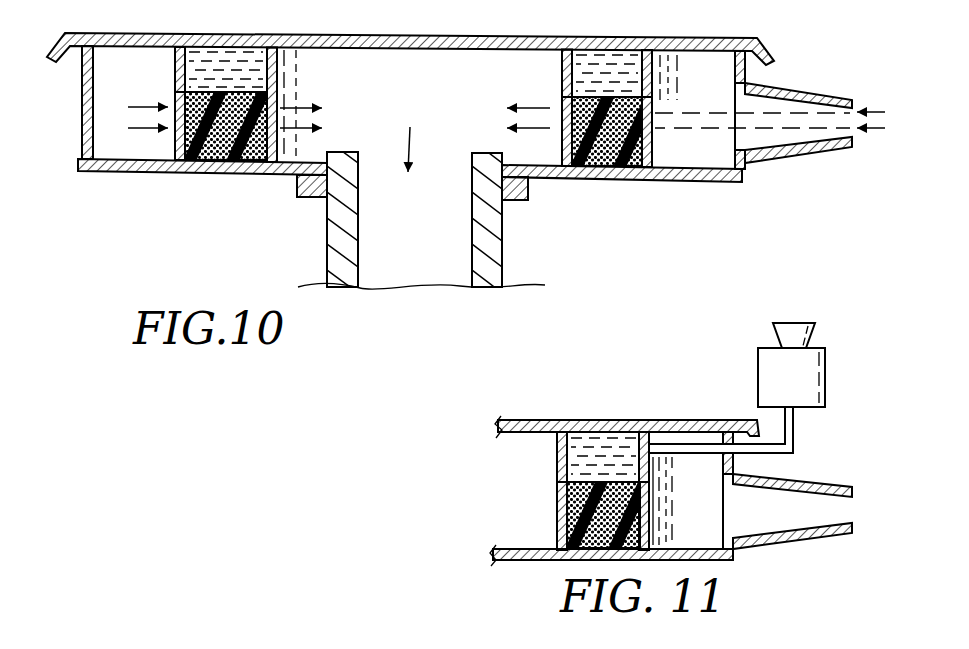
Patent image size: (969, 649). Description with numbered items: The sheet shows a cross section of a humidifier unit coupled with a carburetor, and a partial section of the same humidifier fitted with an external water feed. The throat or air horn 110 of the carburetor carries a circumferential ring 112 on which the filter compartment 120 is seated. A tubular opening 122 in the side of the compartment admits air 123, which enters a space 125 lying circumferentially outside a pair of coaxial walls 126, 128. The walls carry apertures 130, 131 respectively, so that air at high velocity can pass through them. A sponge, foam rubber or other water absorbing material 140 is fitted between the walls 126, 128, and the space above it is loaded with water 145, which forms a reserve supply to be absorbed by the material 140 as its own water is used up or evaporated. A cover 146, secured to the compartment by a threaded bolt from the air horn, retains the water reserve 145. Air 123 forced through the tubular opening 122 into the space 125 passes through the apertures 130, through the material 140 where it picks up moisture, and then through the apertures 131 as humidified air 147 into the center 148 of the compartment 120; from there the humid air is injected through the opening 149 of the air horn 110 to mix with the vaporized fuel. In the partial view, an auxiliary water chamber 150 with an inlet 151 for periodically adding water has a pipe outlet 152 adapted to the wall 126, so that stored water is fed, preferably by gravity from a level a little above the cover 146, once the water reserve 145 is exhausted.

In FIG. 10, the air horn 110 is at (503, 232).
In FIG. 10, the circumferential ring 112 is at (301, 196).
In FIG. 10, the filter compartment 120 is at (656, 182).
In FIG. 11, the filter compartment 120 is at (510, 562).
In FIG. 10, the tubular opening 122 is at (766, 160).
In FIG. 11, the tubular opening 122 is at (768, 548).
In FIG. 10, the air 123 is at (129, 128).
In FIG. 10, the space 125 is at (150, 157).
In FIG. 11, the space 125 is at (717, 532).
In FIG. 10, the wall 126 is at (175, 60).
In FIG. 11, the wall 126 is at (660, 470).
In FIG. 10, the wall 128 is at (562, 62).
In FIG. 11, the wall 128 is at (557, 450).
In FIG. 10, the apertures 130 is at (175, 104).
In FIG. 11, the apertures 130 is at (649, 494).
In FIG. 10, the apertures 131 is at (278, 105).
In FIG. 11, the apertures 131 is at (567, 497).
In FIG. 10, the water absorbing material 140 is at (212, 152).
In FIG. 11, the water absorbing material 140 is at (567, 527).
In FIG. 10, the water 145 is at (214, 63).
In FIG. 11, the water 145 is at (607, 443).
In FIG. 10, the cover 146 is at (391, 35).
In FIG. 11, the cover 146 is at (554, 420).
In FIG. 10, the filtered air flow 147 is at (316, 109).
In FIG. 10, the center 148 is at (430, 93).
In FIG. 10, the opening 149 is at (416, 137).
In FIG. 11, the auxiliary water chamber 150 is at (757, 368).
In FIG. 11, the inlet 151 is at (795, 323).
In FIG. 11, the pipe outlet 152 is at (794, 430).